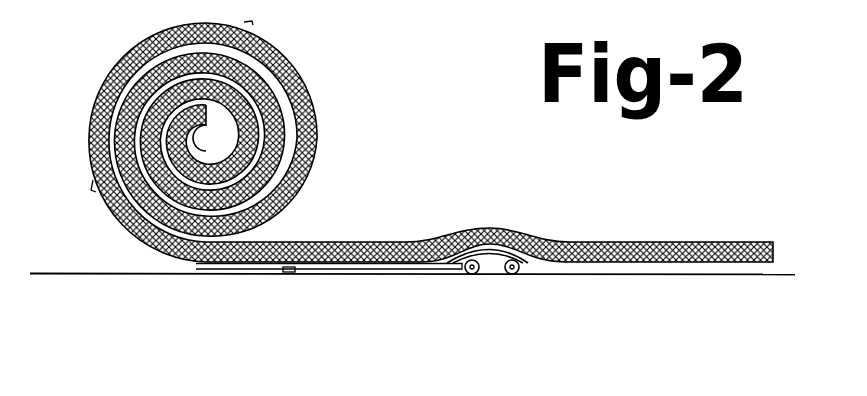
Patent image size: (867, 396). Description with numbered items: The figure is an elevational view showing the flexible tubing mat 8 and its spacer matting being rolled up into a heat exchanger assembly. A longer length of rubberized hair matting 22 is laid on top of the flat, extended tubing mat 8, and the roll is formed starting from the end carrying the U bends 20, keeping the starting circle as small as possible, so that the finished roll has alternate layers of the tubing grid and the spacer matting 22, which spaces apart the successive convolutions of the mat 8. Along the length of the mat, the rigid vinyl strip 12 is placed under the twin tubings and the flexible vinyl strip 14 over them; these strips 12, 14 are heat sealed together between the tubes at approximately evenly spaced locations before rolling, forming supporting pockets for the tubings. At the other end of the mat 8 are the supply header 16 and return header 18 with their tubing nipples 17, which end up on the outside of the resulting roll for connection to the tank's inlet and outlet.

The flexible tubing mat 8 is at (283, 77).
The U bends 20 is at (226, 147).
The rubberized hair matting 22 is at (384, 248).
The flexible vinyl strip 14 is at (294, 252).
The rigid vinyl strip 12 is at (287, 276).
The supply header 16 is at (465, 276).
The tubing nipples 17 is at (497, 276).
The return header 18 is at (513, 276).